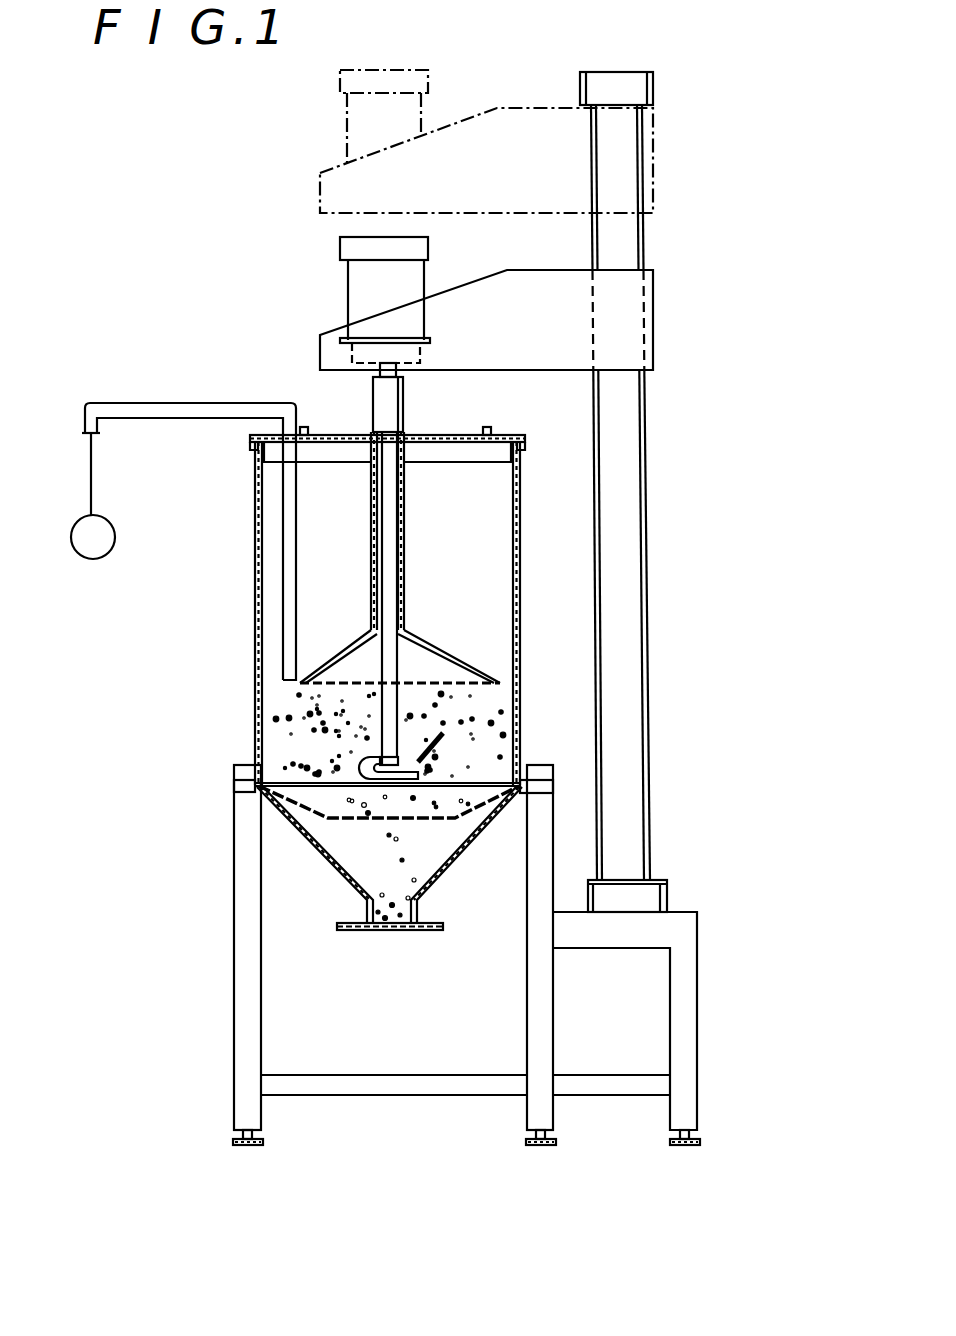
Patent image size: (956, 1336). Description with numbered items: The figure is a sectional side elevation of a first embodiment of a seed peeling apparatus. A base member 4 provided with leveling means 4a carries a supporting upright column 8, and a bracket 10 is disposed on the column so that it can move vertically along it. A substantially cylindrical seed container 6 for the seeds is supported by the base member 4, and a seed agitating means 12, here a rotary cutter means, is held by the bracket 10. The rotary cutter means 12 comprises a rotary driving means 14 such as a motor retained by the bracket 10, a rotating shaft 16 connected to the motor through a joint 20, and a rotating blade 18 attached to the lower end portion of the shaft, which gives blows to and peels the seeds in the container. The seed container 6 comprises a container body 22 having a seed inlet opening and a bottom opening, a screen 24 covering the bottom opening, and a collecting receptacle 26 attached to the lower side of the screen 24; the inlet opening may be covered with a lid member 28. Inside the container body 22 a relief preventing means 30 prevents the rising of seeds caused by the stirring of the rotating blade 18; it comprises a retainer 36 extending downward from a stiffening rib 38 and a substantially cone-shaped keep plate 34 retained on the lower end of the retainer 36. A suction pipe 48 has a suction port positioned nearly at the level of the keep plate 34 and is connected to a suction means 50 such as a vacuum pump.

The base member 4 is at (415, 1095).
The leveling means 4a is at (240, 1138).
The seed container 6 is at (252, 567).
The supporting upright column 8 is at (637, 595).
The bracket 10 is at (620, 178).
The seed agitating means 12 is at (362, 418).
The rotary driving means 14 is at (415, 80).
The rotating shaft 16 is at (390, 591).
The rotating blade 18 is at (418, 765).
The joint 20 is at (403, 405).
The container body 22 is at (255, 493).
The screen 24 is at (370, 818).
The collecting receptacle 26 is at (341, 870).
The lid member 28 is at (318, 432).
The relief preventing means 30 is at (415, 563).
The keep plate 34 is at (450, 653).
The retainer 36 is at (405, 580).
The stiffening rib 38 is at (467, 455).
The suction pipe 48 is at (287, 610).
The suction means 50 is at (73, 545).